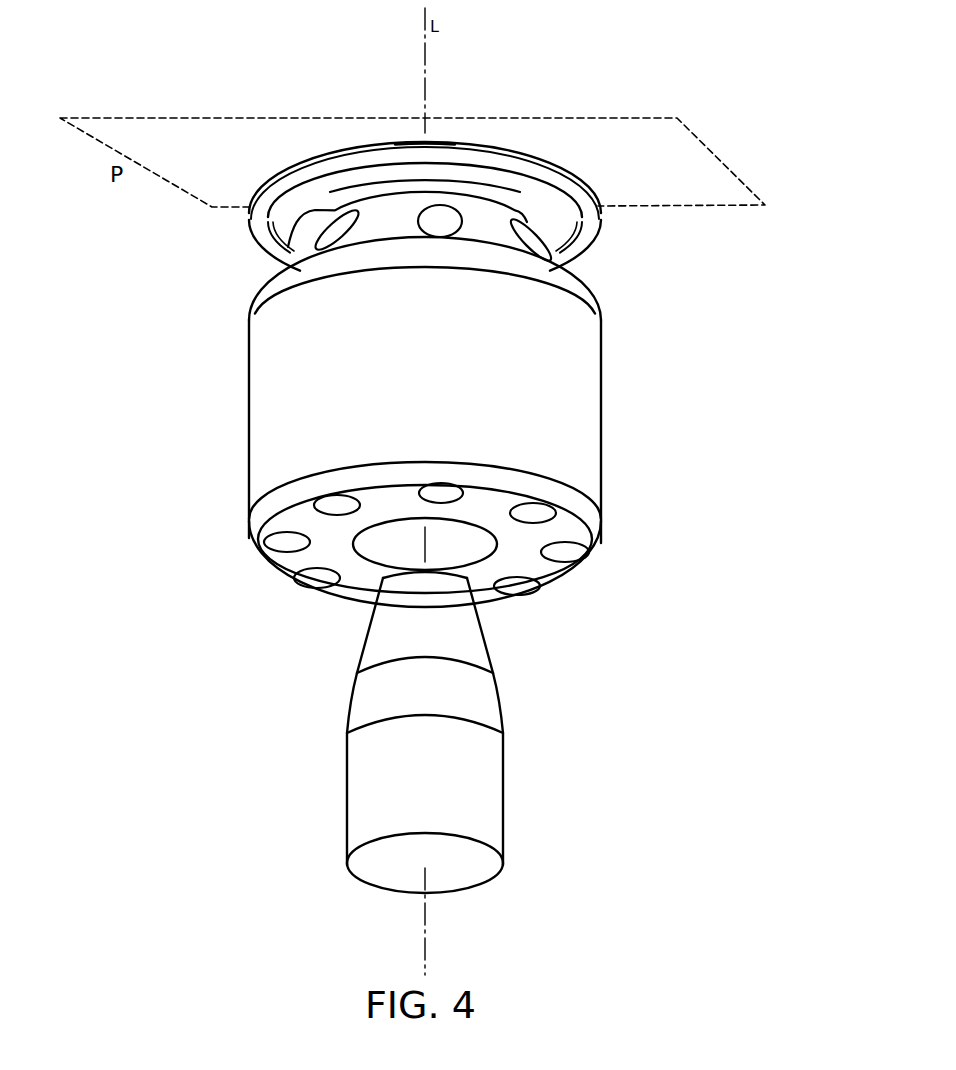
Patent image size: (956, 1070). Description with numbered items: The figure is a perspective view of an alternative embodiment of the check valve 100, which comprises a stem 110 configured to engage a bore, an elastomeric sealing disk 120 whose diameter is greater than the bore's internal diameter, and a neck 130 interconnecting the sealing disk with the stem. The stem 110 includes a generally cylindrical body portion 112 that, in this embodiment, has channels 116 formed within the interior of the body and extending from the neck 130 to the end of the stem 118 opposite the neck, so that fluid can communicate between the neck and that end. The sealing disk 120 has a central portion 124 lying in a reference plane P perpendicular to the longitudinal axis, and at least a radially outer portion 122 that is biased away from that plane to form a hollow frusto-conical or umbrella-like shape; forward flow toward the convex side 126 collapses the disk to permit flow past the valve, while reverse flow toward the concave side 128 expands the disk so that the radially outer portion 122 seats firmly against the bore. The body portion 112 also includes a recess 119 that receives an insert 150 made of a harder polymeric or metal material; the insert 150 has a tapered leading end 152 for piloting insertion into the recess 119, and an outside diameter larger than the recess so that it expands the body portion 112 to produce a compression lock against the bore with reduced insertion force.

The check valve 100 is at (742, 114).
The stem 110 is at (601, 404).
The generally cylindrical body portion 112 is at (249, 468).
The channel 116 is at (538, 244).
The end of the stem 118 is at (280, 556).
The recess 119 is at (480, 556).
The elastomeric sealing disk 120 is at (499, 150).
The radially outer portion 122 is at (592, 223).
The central portion 124 is at (431, 140).
The convex side 126 is at (296, 167).
The concave side 128 is at (257, 226).
The neck 130 is at (302, 258).
The insert 150 is at (347, 803).
The tapered leading end 152 is at (360, 658).